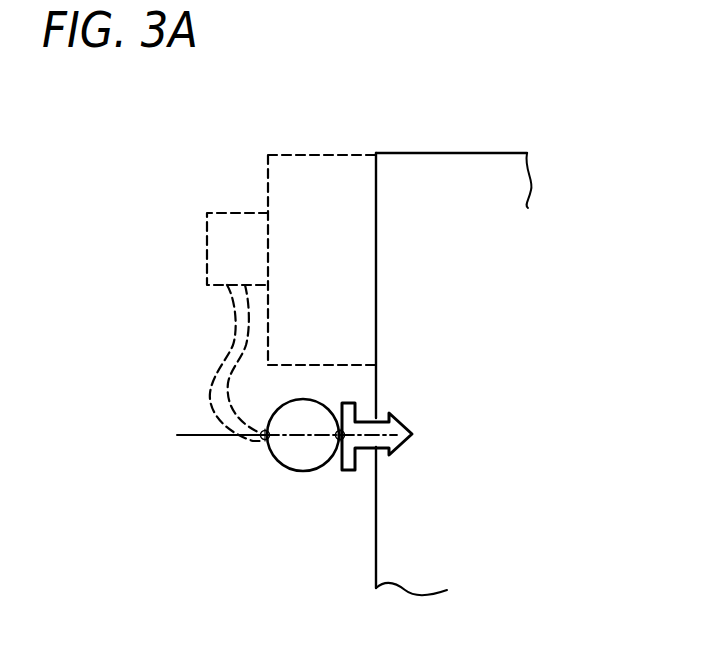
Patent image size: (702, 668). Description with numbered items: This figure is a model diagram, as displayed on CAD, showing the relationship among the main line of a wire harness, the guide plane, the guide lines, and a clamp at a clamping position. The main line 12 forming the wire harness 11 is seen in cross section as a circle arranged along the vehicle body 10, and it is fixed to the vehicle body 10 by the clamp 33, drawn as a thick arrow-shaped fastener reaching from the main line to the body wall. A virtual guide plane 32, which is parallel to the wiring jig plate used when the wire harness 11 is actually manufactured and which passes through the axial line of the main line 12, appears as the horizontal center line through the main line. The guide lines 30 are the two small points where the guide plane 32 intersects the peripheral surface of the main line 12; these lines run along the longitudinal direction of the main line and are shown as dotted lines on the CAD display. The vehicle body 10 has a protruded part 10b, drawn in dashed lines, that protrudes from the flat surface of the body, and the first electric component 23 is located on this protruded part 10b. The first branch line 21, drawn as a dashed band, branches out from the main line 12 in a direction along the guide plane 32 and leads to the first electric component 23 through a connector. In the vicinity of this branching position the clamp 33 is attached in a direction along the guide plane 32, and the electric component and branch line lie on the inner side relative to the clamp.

The vehicle body 10 is at (375, 178).
The protruded part 10b is at (268, 171).
The wire harness 11 is at (313, 423).
The main line 12 is at (305, 400).
The first branch line 21 is at (220, 361).
The first electric component 23 is at (207, 246).
The guide lines 30 is at (337, 442).
The guide plane 32 is at (203, 438).
The clamp 33 is at (407, 423).